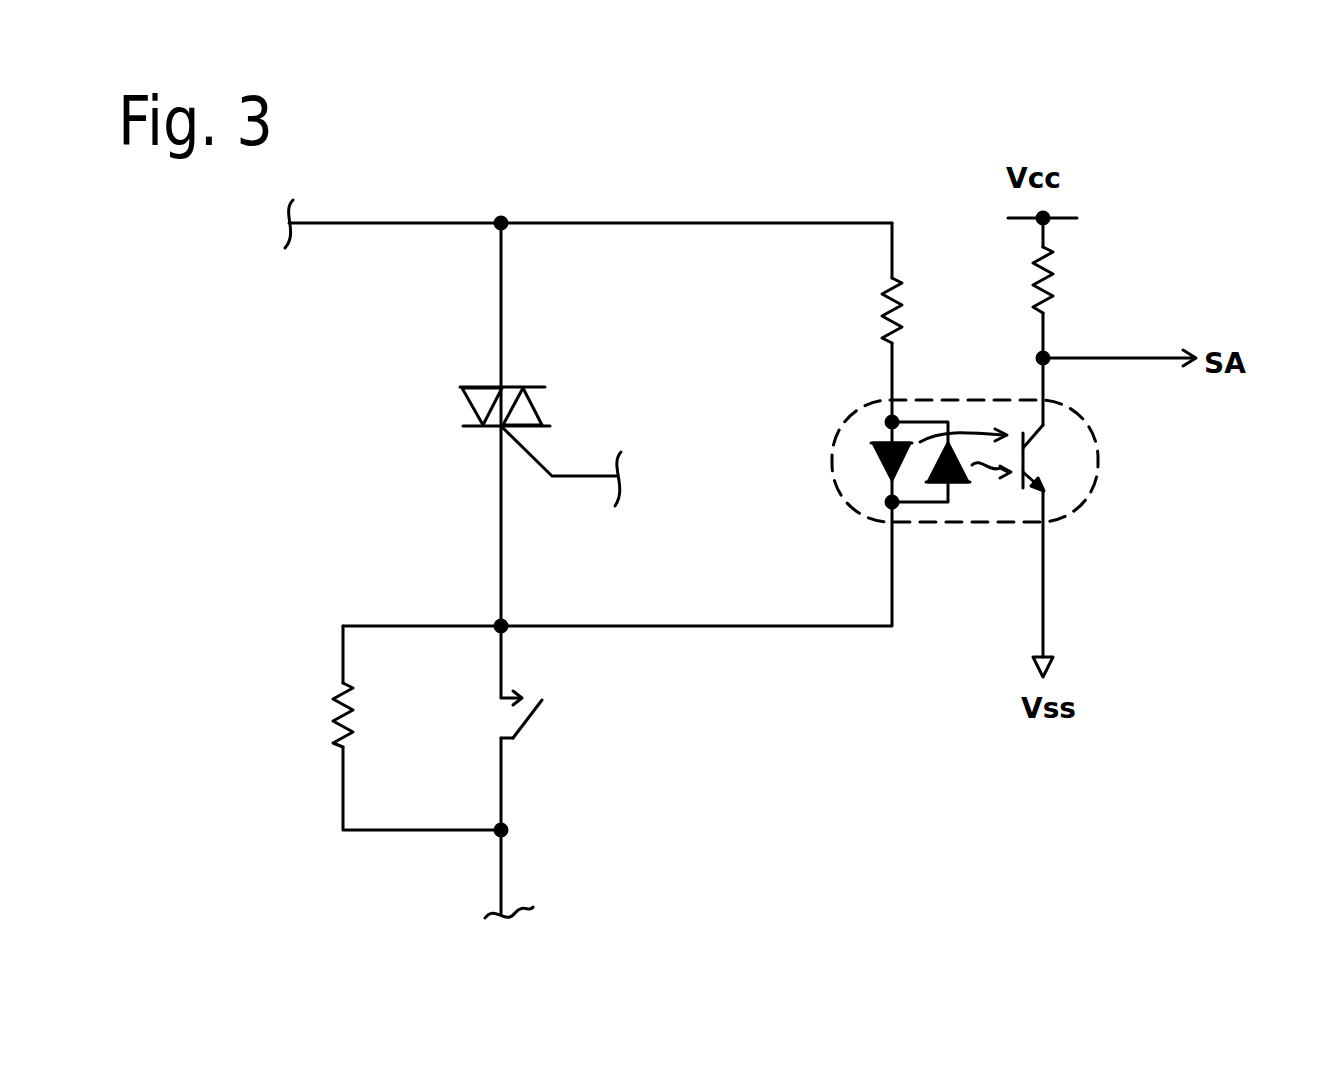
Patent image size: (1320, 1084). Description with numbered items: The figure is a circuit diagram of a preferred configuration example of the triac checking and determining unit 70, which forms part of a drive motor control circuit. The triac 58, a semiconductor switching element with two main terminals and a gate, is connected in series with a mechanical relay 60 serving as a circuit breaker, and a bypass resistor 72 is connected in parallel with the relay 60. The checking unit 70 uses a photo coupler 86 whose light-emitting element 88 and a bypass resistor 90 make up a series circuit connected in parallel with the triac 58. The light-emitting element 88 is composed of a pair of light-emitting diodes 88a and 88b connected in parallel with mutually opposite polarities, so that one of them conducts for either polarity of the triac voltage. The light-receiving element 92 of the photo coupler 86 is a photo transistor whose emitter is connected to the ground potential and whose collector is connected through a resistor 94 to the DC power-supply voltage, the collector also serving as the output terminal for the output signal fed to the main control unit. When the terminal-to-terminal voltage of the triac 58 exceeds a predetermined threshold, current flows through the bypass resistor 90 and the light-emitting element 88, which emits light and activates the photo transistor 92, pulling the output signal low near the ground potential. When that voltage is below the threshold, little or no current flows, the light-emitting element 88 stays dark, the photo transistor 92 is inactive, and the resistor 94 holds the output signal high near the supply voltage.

The triac 58 is at (450, 392).
The mechanical relay 60 is at (552, 715).
The triac checking and determining unit 70 is at (947, 516).
The bypass resistor 72 is at (318, 706).
The photo coupler 86 is at (947, 481).
The light-emitting element 88 is at (864, 517).
The light-emitting diode 88a is at (870, 453).
The light-emitting diode 88b is at (962, 507).
The bypass resistor 90 is at (870, 310).
The light-receiving element 92 is at (1057, 472).
The resistor 94 is at (1067, 285).